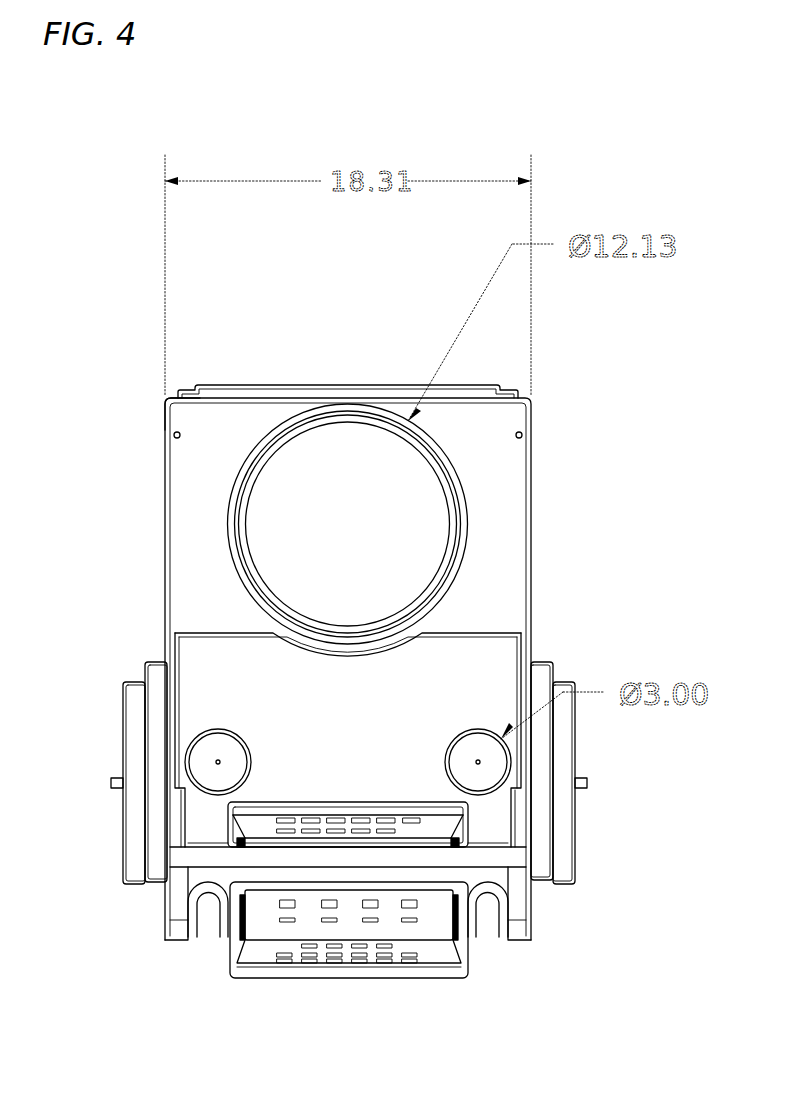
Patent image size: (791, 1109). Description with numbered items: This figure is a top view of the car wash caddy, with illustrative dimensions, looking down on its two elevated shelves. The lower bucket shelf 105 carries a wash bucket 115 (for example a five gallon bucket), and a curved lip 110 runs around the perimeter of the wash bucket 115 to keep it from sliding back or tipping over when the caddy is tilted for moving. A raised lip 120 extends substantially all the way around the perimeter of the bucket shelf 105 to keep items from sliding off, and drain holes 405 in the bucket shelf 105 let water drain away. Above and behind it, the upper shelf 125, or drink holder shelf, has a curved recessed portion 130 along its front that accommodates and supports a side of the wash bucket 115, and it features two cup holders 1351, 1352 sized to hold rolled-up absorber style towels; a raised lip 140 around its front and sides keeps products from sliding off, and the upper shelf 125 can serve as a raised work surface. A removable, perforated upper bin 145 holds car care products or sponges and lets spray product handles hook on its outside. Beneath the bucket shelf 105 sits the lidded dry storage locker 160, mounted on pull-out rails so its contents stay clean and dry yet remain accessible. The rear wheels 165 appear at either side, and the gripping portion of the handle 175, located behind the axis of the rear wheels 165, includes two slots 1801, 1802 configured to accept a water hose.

The bucket shelf 105 is at (498, 572).
The curved lip 110 is at (470, 520).
The wash bucket 115 is at (388, 507).
The raised lip 120 is at (165, 422).
The upper shelf 125 is at (210, 667).
The curved recessed portion 130 is at (278, 632).
The cup holder 1351 is at (478, 747).
The cup holder 1352 is at (225, 752).
The raised lip 140 is at (483, 633).
The upper bin 145 is at (447, 972).
The dry storage locker 160 is at (295, 384).
The rear wheels 165 is at (568, 737).
The handle 175 is at (463, 873).
The slot 1801 is at (207, 912).
The slot 1802 is at (490, 910).
The drain hole 405 is at (174, 437).